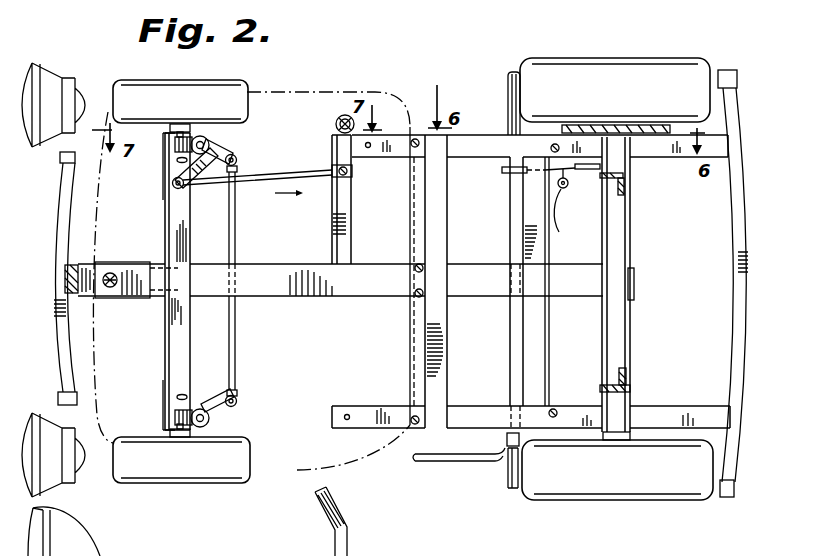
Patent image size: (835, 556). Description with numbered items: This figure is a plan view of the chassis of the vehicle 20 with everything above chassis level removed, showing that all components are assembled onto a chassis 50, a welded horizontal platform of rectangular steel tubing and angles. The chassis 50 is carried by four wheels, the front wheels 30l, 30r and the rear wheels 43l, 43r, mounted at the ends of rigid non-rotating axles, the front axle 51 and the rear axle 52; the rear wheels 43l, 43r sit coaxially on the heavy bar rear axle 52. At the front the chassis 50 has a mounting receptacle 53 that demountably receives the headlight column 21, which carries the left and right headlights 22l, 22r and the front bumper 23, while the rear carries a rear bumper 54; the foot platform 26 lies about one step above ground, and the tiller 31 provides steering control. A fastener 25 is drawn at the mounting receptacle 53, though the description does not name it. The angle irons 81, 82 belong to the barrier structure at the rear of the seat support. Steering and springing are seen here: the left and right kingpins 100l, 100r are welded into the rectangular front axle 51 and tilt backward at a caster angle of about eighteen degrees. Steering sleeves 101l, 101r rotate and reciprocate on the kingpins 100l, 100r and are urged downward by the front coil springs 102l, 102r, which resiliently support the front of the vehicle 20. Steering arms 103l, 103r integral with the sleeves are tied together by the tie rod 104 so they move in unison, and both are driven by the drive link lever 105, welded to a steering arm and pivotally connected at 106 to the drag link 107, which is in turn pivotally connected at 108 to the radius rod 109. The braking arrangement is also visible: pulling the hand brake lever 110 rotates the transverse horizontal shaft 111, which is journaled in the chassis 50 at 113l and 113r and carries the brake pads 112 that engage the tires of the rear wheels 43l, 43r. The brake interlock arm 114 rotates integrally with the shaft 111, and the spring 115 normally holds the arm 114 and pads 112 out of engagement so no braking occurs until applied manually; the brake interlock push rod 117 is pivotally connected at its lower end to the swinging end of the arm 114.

The vehicle 20 is at (472, 58).
The headlight column 21 is at (65, 285).
The right headlight 22r is at (61, 68).
The left headlight 22l is at (45, 412).
The front bumper 23 is at (55, 343).
The bolt 25 is at (110, 288).
The foot platform 26 is at (338, 92).
The right front wheel 30r is at (197, 79).
The left front wheel 30l is at (176, 483).
The tiller 31 is at (336, 124).
The right rear wheel 43r is at (652, 58).
The left rear wheel 43l is at (675, 492).
The chassis 50 is at (467, 128).
The front axle 51 is at (167, 356).
The rear axle 52 is at (630, 354).
The mounting receptacle 53 is at (130, 258).
The rear bumper 54 is at (738, 246).
The angle iron 81 is at (630, 388).
The angle iron 82 is at (625, 186).
The right kingpin 100r is at (211, 143).
The left kingpin 100l is at (206, 406).
The right steering sleeve 101r is at (212, 136).
The left steering sleeve 101l is at (175, 420).
The right front coil spring 102r is at (191, 128).
The left front coil spring 102l is at (183, 437).
The right steering arm 103r is at (240, 158).
The left steering arm 103l is at (240, 410).
The tie rod 104 is at (237, 356).
The drive link lever 105 is at (207, 170).
The pivotal connection 106 is at (182, 188).
The drag link 107 is at (312, 185).
The pivotal connection 108 is at (352, 174).
The radius rod 109 is at (337, 146).
The hand brake lever 110 is at (446, 463).
The transverse horizontal shaft 111 is at (510, 380).
The brake pad 112 is at (513, 75).
The right journal 113r is at (509, 130).
The left journal 113l is at (506, 439).
The brake interlock arm 114 is at (566, 189).
The spring 115 is at (569, 214).
The brake interlock push rod 117 is at (600, 167).